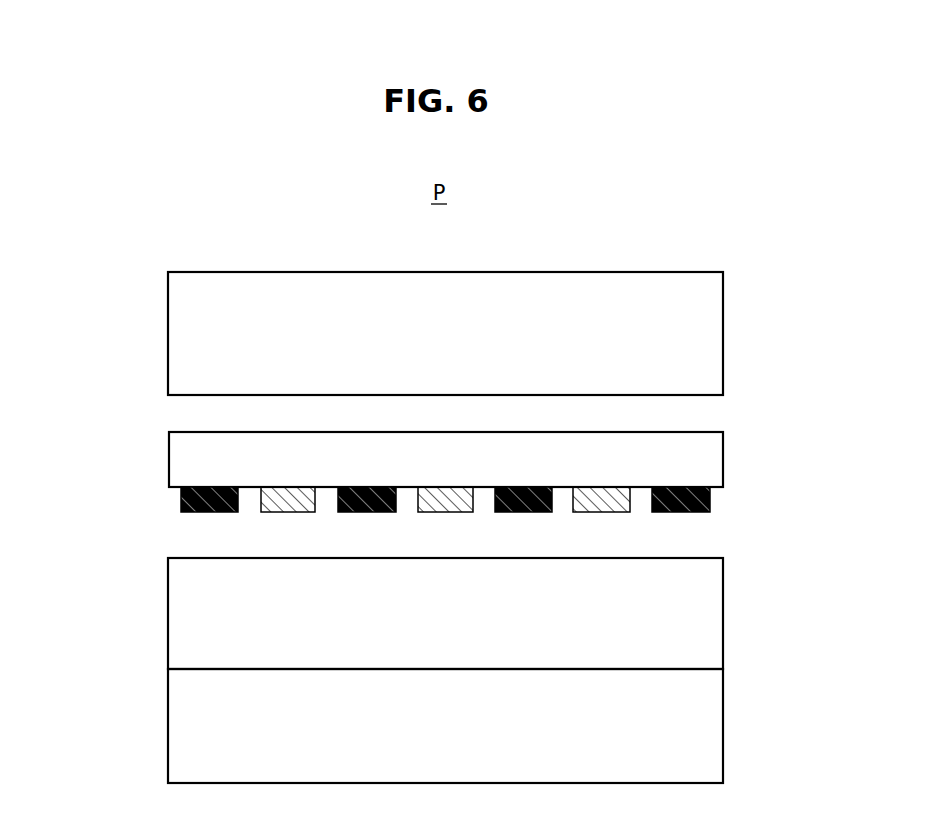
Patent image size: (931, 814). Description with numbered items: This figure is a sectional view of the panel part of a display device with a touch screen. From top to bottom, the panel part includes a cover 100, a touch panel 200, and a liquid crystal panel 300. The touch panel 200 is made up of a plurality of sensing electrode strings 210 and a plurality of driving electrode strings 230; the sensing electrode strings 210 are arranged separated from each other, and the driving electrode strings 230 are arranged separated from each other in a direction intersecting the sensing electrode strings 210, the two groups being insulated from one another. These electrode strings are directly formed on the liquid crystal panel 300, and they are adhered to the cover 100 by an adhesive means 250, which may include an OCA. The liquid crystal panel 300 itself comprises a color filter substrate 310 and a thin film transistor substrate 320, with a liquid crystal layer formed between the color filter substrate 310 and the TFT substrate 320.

The cover 100 is at (190, 331).
The touch panel 200 is at (433, 490).
The adhesive means 250 is at (190, 459).
The driving electrode strings 230 is at (182, 499).
The sensing electrode strings 210 is at (274, 512).
The liquid crystal panel 300 is at (441, 671).
The color filter substrate 310 is at (190, 614).
The TFT substrate 320 is at (190, 732).